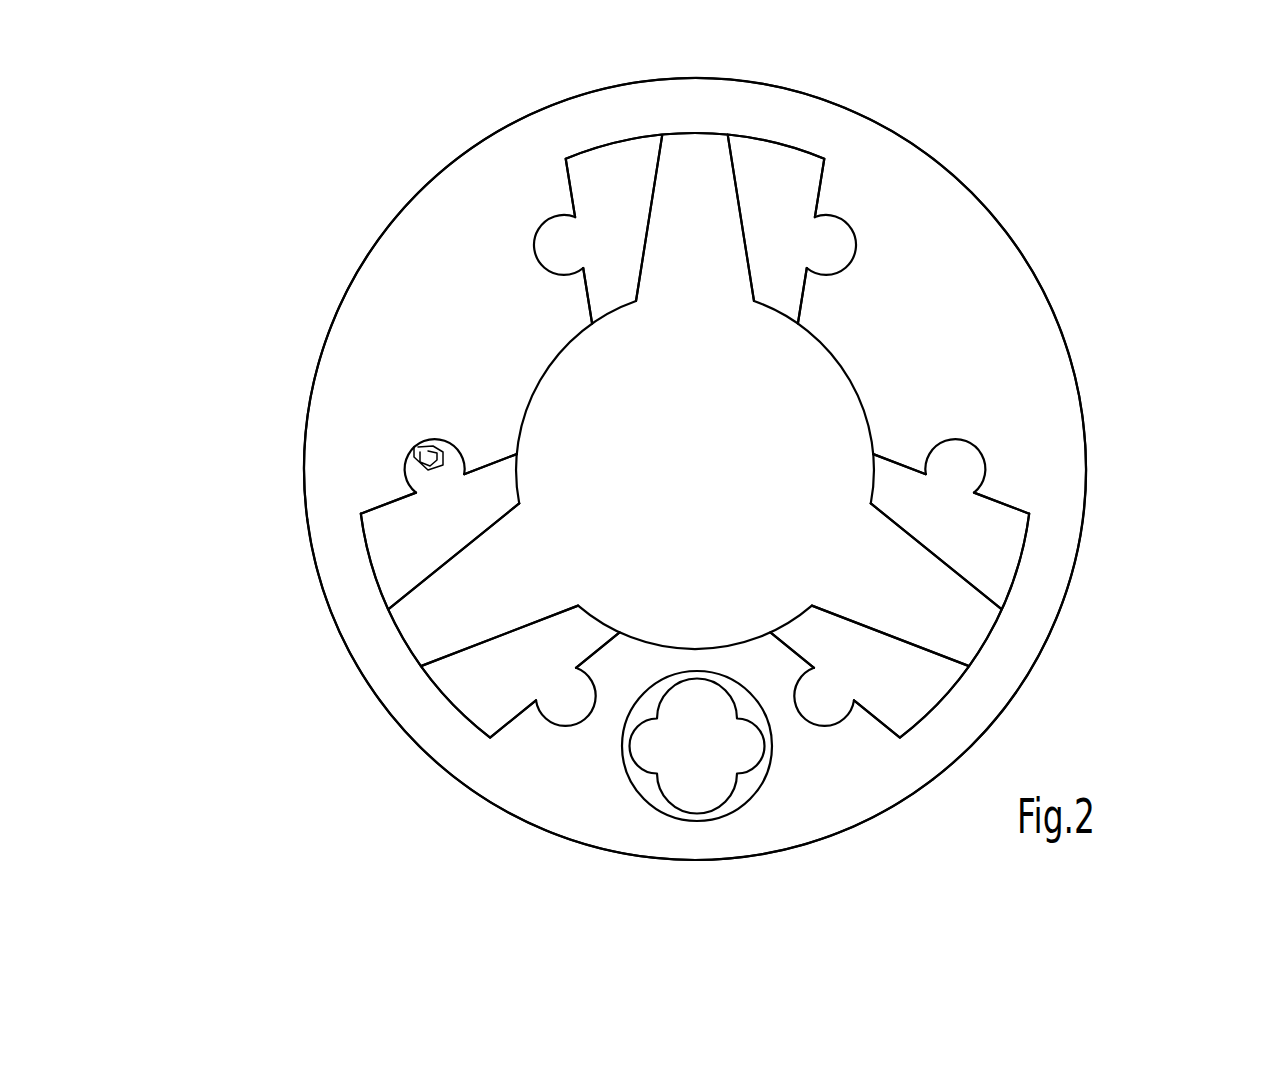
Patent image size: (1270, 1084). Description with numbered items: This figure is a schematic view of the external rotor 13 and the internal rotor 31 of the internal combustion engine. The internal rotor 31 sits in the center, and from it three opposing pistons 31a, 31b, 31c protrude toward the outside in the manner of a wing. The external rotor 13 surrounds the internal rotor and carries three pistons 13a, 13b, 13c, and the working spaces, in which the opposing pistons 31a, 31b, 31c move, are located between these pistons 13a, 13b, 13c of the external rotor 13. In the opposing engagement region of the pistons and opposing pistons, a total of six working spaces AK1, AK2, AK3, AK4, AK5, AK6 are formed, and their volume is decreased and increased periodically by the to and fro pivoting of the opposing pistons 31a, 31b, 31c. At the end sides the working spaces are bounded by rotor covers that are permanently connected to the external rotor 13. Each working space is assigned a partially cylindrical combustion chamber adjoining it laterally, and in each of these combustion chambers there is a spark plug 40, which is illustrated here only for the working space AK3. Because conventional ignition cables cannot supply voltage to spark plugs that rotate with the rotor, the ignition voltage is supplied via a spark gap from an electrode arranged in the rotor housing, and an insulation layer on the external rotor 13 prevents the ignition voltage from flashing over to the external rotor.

The external rotor 13 is at (1082, 400).
The piston of the external rotor 13a is at (925, 316).
The piston of the external rotor 13b is at (783, 727).
The piston of the external rotor 13c is at (482, 245).
The internal rotor 31 is at (942, 547).
The opposing piston 31a is at (695, 148).
The opposing piston 31b is at (940, 602).
The opposing piston 31c is at (445, 622).
The working space AK1 is at (818, 695).
The working space AK2 is at (578, 705).
The working space AK3 is at (407, 458).
The working space AK4 is at (550, 238).
The working space AK5 is at (842, 242).
The working space AK6 is at (968, 462).
The spark plug 40 is at (432, 445).